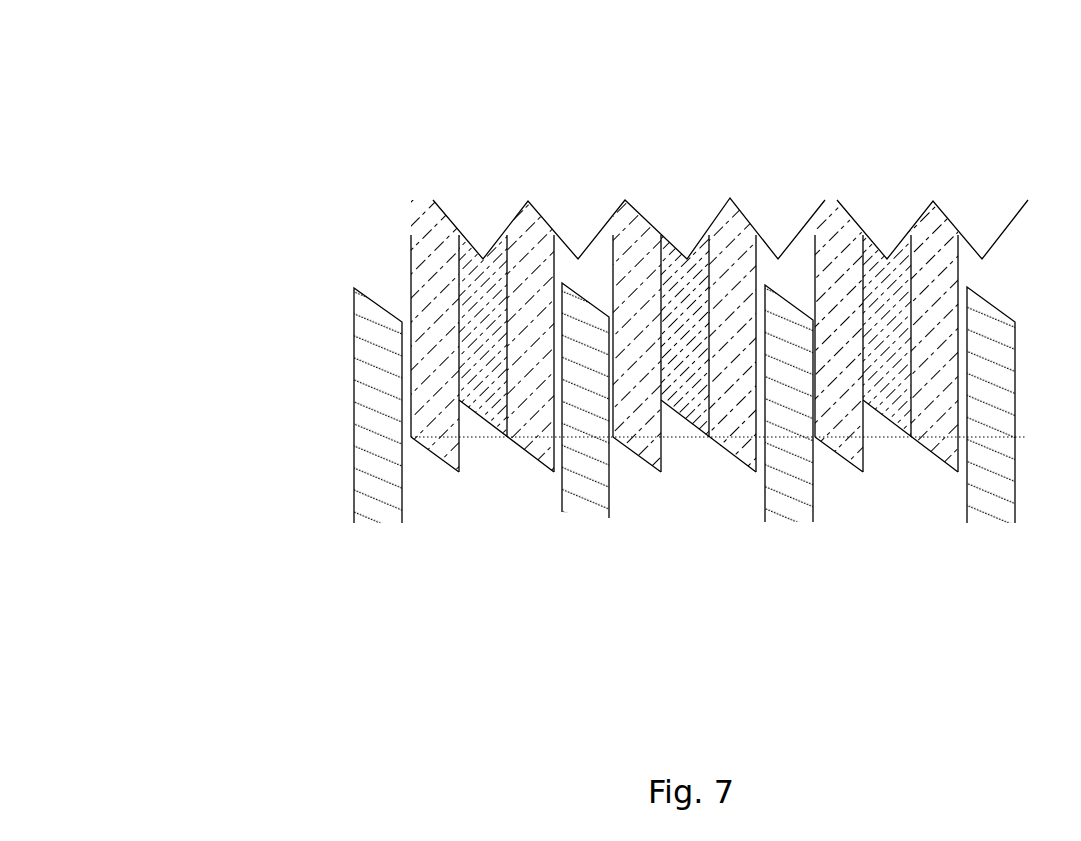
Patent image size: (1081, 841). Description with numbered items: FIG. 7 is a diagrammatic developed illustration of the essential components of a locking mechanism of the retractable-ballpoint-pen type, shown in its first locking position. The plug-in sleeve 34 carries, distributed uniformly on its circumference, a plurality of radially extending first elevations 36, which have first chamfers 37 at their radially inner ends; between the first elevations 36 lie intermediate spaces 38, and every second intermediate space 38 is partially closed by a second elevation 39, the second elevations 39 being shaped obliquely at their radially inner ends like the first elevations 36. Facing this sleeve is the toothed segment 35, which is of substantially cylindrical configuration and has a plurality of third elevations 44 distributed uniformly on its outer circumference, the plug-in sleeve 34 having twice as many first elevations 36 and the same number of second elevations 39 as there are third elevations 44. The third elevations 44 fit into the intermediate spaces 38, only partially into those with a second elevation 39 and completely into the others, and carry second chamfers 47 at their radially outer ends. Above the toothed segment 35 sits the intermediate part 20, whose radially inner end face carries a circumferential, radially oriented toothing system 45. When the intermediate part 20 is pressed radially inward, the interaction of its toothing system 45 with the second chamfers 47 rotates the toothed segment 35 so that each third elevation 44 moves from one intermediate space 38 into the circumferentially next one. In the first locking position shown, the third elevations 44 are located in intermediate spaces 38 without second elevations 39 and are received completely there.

The intermediate part 20 is at (730, 147).
The toothing system 45 is at (763, 222).
The plug-in sleeve 34 is at (684, 373).
The first elevations 36 is at (684, 373).
The toothed segment 35 is at (580, 390).
The third elevations 44 is at (580, 390).
The first chamfers 37 is at (432, 450).
The intermediate spaces 38 is at (473, 428).
The second elevations 39 is at (490, 378).
The second chamfers 47 is at (580, 300).